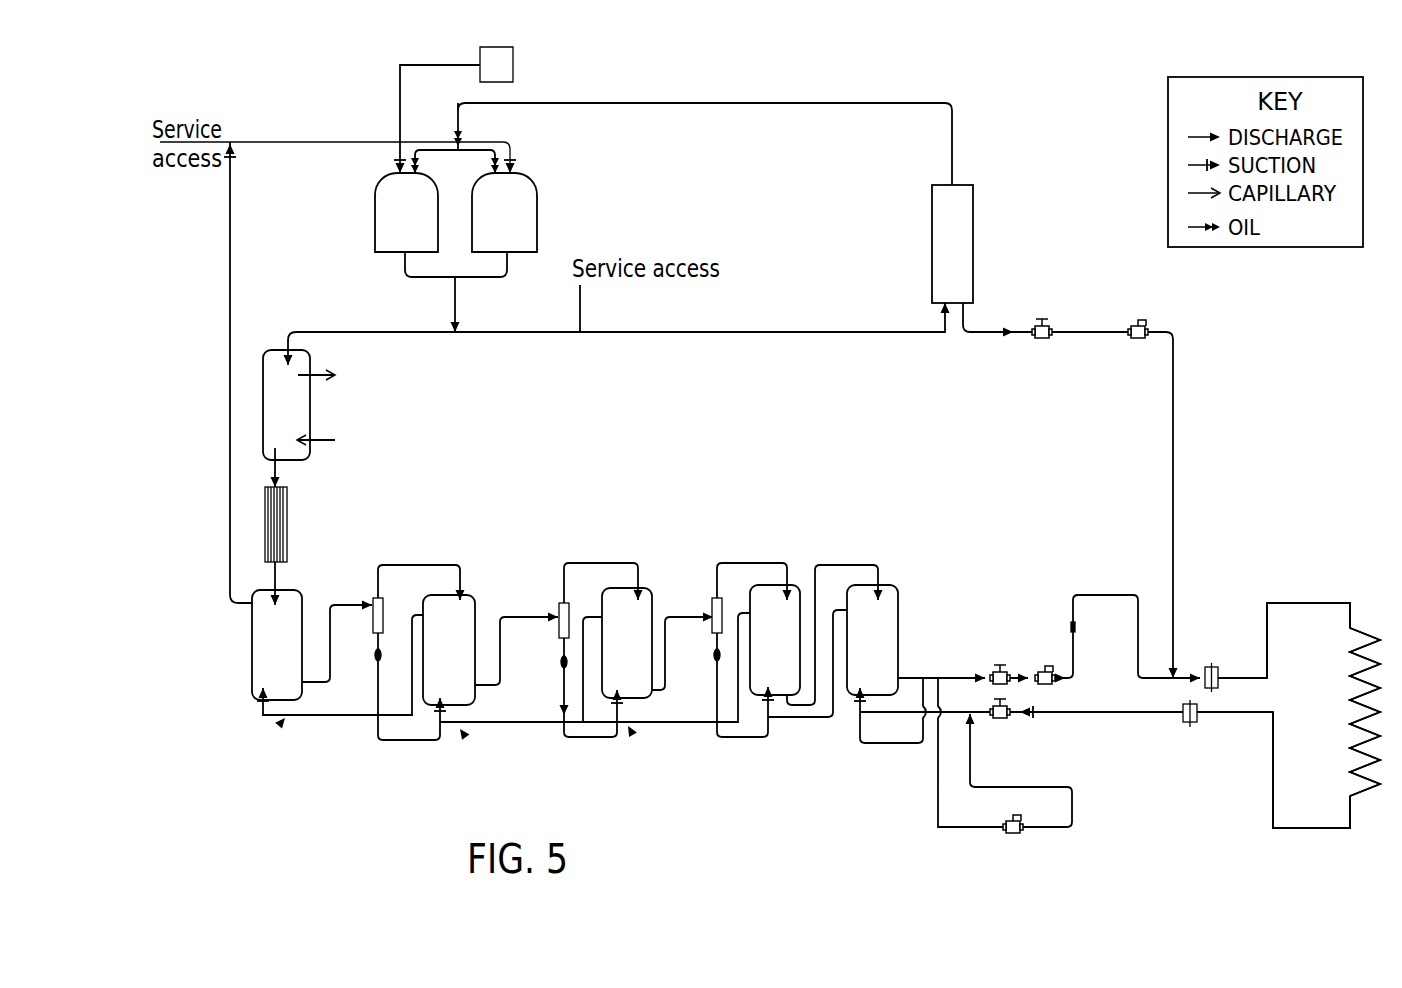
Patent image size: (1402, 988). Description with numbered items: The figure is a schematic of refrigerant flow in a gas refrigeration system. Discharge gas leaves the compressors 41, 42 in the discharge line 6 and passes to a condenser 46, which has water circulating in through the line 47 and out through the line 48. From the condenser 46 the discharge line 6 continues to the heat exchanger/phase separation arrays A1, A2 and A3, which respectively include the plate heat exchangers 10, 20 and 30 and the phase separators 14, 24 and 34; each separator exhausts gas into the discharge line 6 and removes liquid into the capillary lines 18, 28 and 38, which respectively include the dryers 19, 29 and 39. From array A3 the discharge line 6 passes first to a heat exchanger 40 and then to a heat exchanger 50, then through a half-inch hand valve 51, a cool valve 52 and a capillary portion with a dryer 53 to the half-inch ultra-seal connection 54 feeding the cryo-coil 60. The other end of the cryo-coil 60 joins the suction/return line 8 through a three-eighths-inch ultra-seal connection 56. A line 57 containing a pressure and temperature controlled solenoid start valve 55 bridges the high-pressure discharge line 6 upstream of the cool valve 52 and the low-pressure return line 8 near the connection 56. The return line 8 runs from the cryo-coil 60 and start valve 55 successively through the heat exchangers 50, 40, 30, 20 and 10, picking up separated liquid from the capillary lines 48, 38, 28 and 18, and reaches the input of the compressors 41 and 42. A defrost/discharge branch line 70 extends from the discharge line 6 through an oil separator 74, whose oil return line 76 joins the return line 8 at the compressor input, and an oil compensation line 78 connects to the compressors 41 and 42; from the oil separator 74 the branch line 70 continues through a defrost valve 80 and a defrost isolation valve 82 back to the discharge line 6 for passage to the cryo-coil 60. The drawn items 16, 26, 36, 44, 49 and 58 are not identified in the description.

The discharge line 6 is at (340, 330).
The suction/return line 8 is at (230, 305).
The plate heat exchanger 10 is at (277, 645).
The phase separator 14 is at (373, 600).
The discharge loop line 16 is at (430, 565).
The capillary line 18 is at (418, 742).
The dryer 19 is at (374, 655).
The plate heat exchanger 20 is at (449, 650).
The phase separator 24 is at (560, 617).
The discharge loop line 26 is at (612, 563).
The capillary line 28 is at (590, 738).
The dryer 29 is at (561, 662).
The plate heat exchanger 30 is at (627, 643).
The phase separator 34 is at (712, 603).
The discharge loop line 36 is at (765, 563).
The capillary line 38 is at (762, 740).
The dryer 39 is at (713, 655).
The heat exchanger 40 is at (775, 640).
The compressor 41 is at (406, 212).
The compressor 42 is at (504, 212).
The line 44 is at (275, 470).
The condenser 46 is at (310, 402).
The water line 47 is at (322, 441).
The line 48 is at (312, 375).
The heat exchanger 49 is at (287, 490).
The heat exchanger 50 is at (872, 640).
The hand valve 51 is at (1000, 666).
The cool valve 52 is at (1055, 665).
The dryer 53 is at (1071, 625).
The ultra-seal connection 54 is at (1212, 665).
The solenoid start valve 55 is at (1005, 828).
The ultra-seal connection 56 is at (1191, 723).
The line 57 is at (1077, 805).
The shut-off valve 58 is at (1003, 720).
The cryo-coil 60 is at (1323, 715).
The defrost/discharge branch line 70 is at (880, 330).
The oil separator 74 is at (975, 197).
The oil return line 76 is at (935, 103).
The oil compensation line 78 is at (470, 148).
The defrost valve 80 is at (1138, 339).
The defrost isolation valve 82 is at (1042, 339).
The heat exchanger/phase separation array A1 is at (283, 721).
The heat exchanger/phase separation array A2 is at (463, 733).
The heat exchanger/phase separation array A3 is at (631, 730).